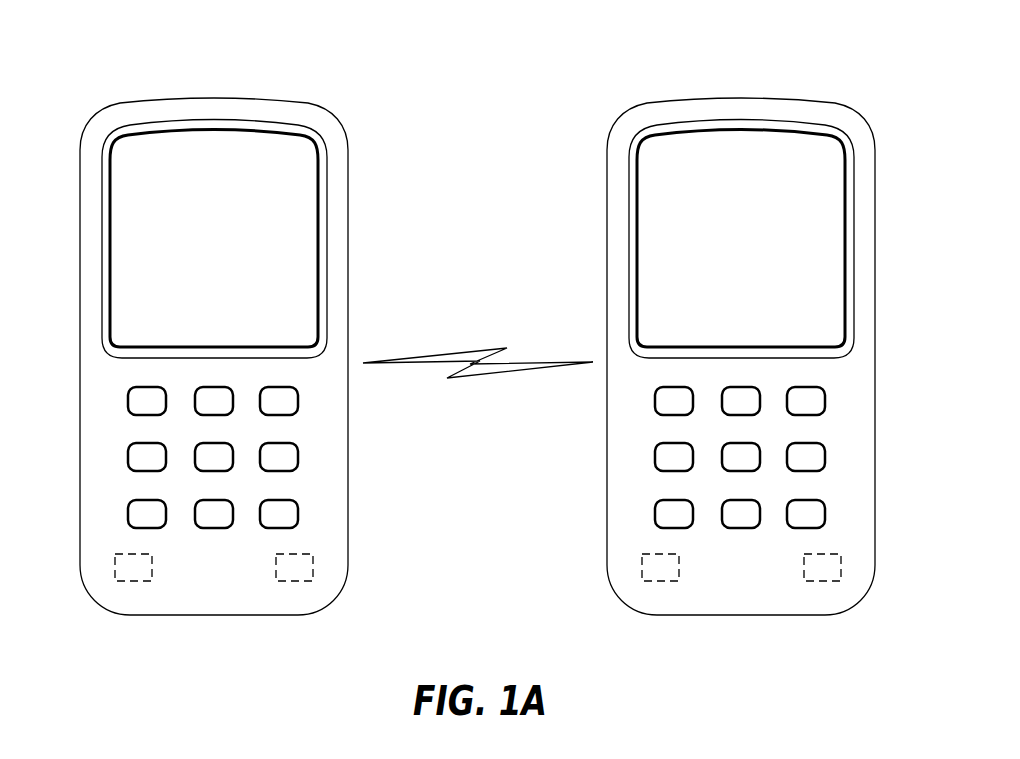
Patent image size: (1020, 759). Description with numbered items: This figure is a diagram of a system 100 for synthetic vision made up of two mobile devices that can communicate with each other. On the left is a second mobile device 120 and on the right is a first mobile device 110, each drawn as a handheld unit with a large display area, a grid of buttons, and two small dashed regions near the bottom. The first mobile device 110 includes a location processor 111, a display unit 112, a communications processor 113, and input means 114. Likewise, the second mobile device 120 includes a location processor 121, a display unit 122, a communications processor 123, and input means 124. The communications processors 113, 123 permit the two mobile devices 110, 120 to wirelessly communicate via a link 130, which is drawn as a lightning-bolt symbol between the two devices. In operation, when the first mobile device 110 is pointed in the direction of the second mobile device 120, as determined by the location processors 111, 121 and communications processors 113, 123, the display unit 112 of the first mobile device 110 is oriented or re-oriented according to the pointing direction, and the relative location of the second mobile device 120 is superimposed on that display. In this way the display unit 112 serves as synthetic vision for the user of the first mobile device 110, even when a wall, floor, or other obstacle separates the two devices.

The system 100 is at (110, 40).
The first mobile device 110 is at (740, 99).
The location processor 111 is at (840, 565).
The display unit 112 is at (825, 262).
The communications processor 113 is at (642, 563).
The input means 114 is at (826, 400).
The second mobile device 120 is at (213, 99).
The location processor 121 is at (115, 563).
The display unit 122 is at (297, 262).
The communications processor 123 is at (313, 565).
The input means 124 is at (298, 400).
The link 130 is at (500, 373).